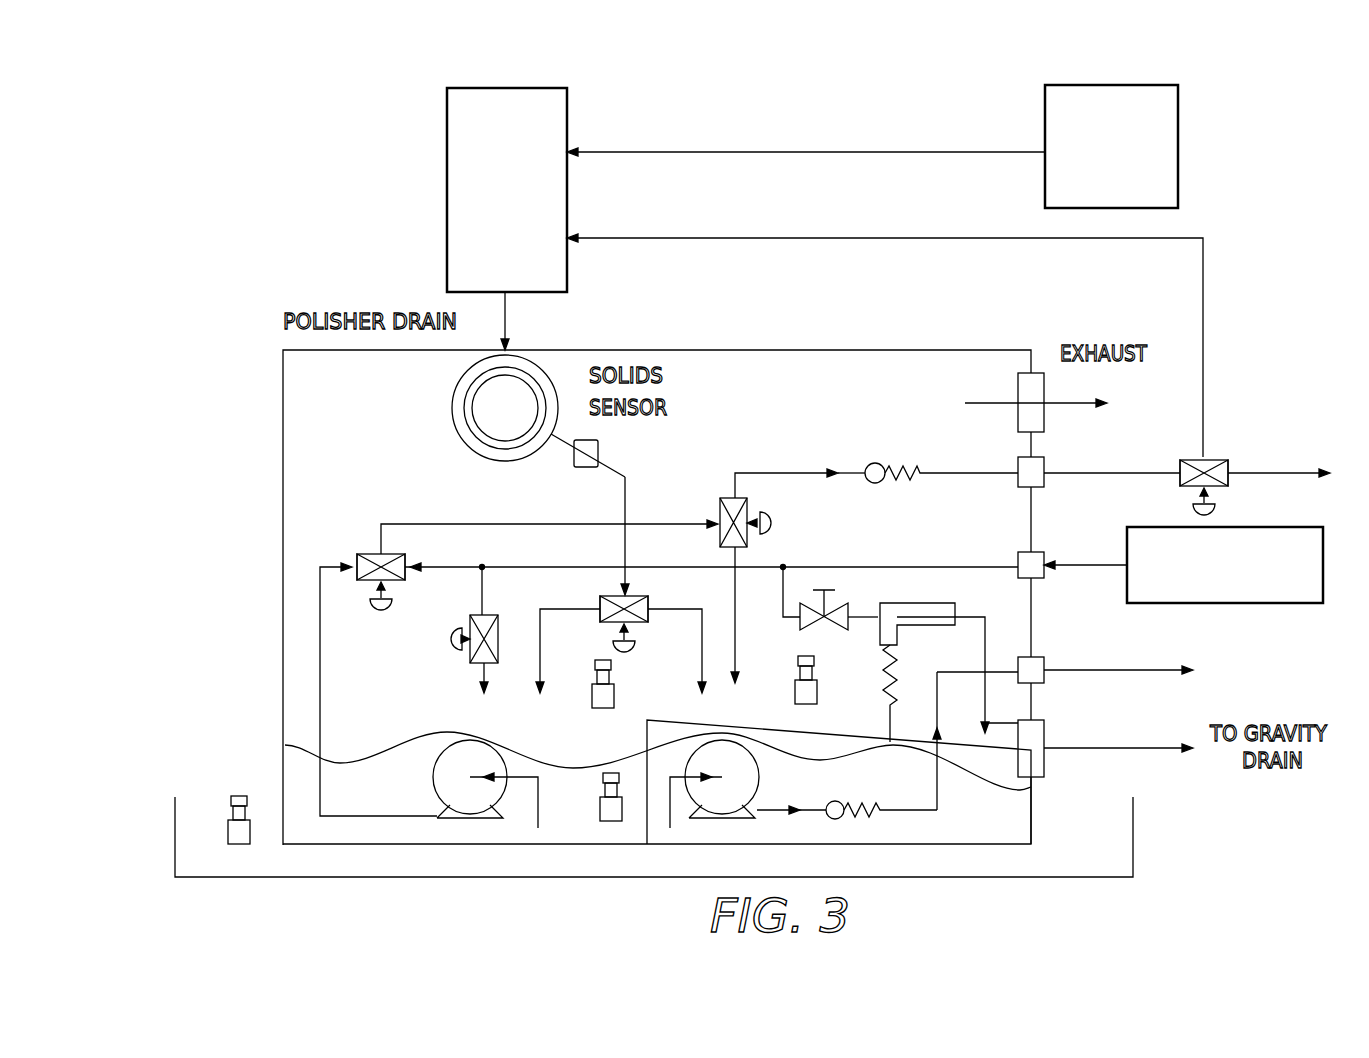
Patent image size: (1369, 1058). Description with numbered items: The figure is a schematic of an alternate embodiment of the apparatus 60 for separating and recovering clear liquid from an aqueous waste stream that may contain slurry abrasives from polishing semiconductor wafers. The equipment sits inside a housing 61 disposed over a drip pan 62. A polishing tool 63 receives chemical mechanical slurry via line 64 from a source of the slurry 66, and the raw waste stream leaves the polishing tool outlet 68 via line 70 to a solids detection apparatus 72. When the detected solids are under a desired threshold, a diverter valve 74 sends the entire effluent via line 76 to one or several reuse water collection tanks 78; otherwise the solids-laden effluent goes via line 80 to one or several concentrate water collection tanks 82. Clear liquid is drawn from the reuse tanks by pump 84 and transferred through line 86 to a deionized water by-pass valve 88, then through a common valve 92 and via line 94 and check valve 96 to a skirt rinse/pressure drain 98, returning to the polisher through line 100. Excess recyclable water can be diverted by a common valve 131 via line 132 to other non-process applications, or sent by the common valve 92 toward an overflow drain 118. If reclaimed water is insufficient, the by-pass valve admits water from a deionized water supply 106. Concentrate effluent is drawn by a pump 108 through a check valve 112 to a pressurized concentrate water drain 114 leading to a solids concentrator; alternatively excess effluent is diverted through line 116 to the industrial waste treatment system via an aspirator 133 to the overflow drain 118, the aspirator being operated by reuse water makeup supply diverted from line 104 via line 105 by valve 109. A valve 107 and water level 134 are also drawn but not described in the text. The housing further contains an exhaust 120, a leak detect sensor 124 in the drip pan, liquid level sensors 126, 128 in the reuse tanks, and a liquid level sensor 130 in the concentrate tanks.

The apparatus 60 is at (228, 410).
The housing 61 is at (283, 540).
The drip pan 62 is at (1135, 832).
The polishing tool 63 is at (487, 211).
The line 64 is at (797, 152).
The source of the slurry 66 is at (1094, 158).
The polishing tool outlet 68 is at (452, 392).
The line 70 is at (623, 500).
The solids detection apparatus 72 is at (598, 450).
The diverter valve 74 is at (648, 606).
The line 76 is at (585, 609).
The reuse water collection tanks 78 is at (560, 825).
The line 80 is at (690, 613).
The concentrate water collection tanks 82 is at (986, 825).
The pump 84 is at (475, 792).
The line 86 is at (320, 655).
The deionized water by-pass valve 88 is at (381, 554).
The common valve 92 is at (757, 512).
The line 94 is at (795, 470).
The check valve 96 is at (874, 462).
The skirt rinse/pressure drain 98 is at (1035, 478).
The line 100 is at (1204, 292).
The line 104 is at (890, 565).
The line 105 is at (783, 605).
The deionized water supply 106 is at (1265, 603).
The control valve 107 is at (470, 618).
The pump 108 is at (745, 790).
The valve 109 is at (812, 630).
The check valve 112 is at (840, 820).
The pressurized concentrate water drain 114 is at (1048, 660).
The line 116 is at (905, 670).
The overflow drain 118 is at (1043, 740).
The exhaust 120 is at (1015, 395).
The leak detect sensor 124 is at (228, 830).
The liquid level sensor 126 is at (598, 816).
The liquid level sensor 128 is at (590, 695).
The liquid level sensor 130 is at (796, 695).
The common valve 131 is at (1212, 458).
The line 132 is at (1280, 470).
The aspirator 133 is at (957, 606).
The water level 134 is at (825, 735).